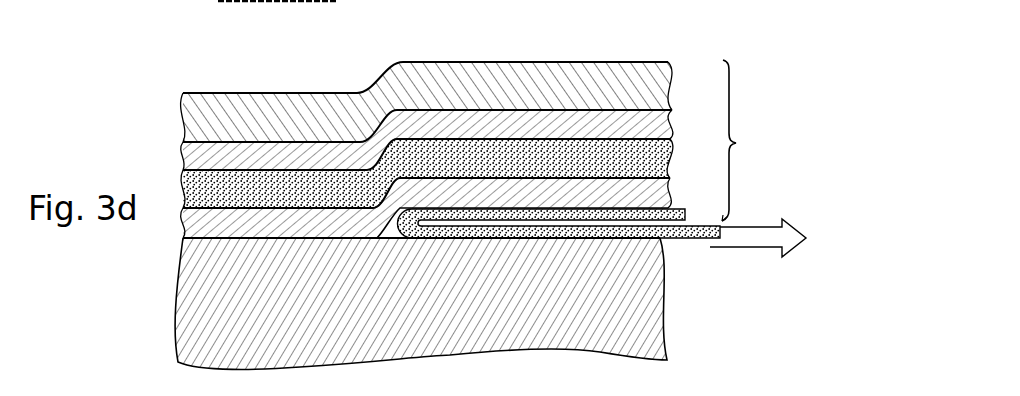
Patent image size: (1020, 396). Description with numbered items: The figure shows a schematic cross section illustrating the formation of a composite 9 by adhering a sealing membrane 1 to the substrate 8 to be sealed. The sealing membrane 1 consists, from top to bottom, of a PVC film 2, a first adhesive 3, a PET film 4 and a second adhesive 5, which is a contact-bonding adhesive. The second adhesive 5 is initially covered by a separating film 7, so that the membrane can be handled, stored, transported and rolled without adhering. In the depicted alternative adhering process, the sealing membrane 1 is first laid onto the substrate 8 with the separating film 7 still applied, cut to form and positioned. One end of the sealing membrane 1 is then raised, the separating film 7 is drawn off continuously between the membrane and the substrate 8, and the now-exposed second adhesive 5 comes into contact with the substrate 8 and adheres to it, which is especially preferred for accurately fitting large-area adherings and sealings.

The sealing membrane 1 is at (739, 140).
The PVC film (F1) 2 is at (668, 57).
The first adhesive (K1) 3 is at (676, 126).
The PET film (F2) 4 is at (674, 154).
The second adhesive (K2) 5 is at (660, 193).
The separating film (F4) 7 is at (726, 220).
The substrate (S1) 8 is at (648, 298).
The composite 9 is at (485, 191).